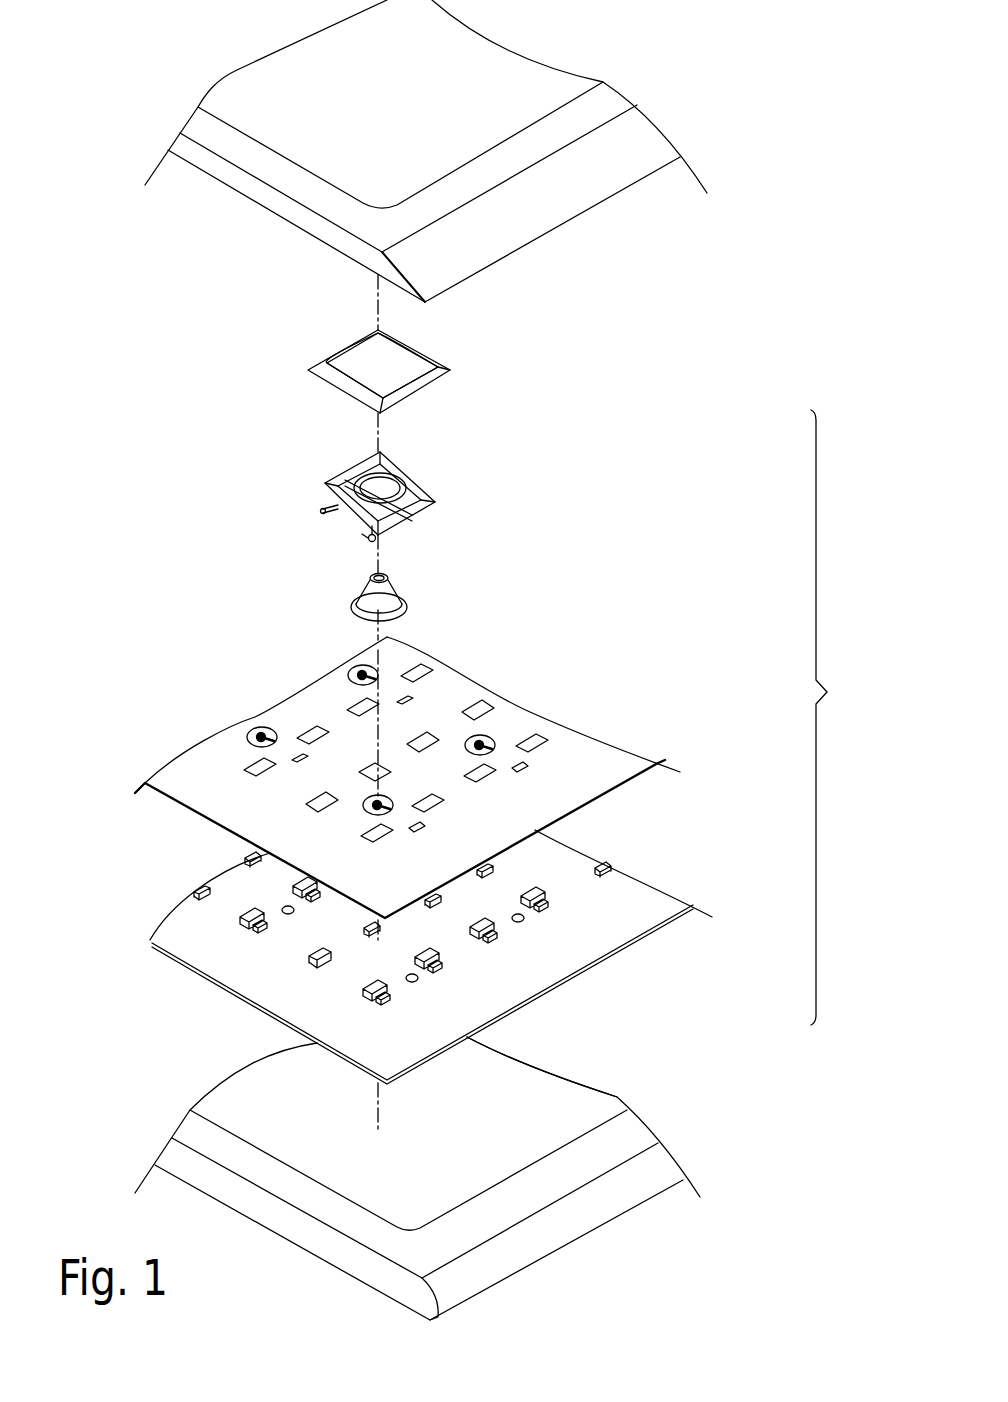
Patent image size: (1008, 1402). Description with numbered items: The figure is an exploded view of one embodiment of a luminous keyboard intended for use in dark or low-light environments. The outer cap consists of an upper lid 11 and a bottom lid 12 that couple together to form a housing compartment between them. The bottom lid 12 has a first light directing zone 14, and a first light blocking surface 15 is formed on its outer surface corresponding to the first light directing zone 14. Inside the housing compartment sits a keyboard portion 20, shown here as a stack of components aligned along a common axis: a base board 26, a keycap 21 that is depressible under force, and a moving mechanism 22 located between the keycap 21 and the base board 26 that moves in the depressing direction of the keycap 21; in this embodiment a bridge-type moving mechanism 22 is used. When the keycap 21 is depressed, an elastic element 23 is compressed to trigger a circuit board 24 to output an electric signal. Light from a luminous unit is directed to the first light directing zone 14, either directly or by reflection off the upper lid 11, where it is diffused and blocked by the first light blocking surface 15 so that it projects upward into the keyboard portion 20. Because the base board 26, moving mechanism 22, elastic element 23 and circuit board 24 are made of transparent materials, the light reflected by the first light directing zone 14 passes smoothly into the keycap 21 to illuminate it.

The upper lid 11 is at (520, 227).
The bottom lid 12 is at (583, 1205).
The first light directing zone 14 is at (558, 1105).
The first light blocking surface 15 is at (505, 1280).
The keyboard portion 20 is at (839, 717).
The keycap 21 is at (412, 377).
The moving mechanism 22 is at (403, 518).
The elastic element 23 is at (383, 610).
The circuit board 24 is at (580, 783).
The base board 26 is at (570, 945).